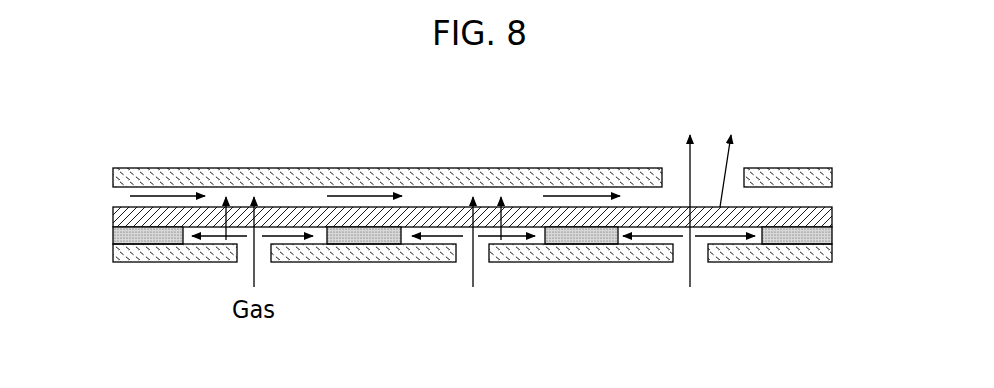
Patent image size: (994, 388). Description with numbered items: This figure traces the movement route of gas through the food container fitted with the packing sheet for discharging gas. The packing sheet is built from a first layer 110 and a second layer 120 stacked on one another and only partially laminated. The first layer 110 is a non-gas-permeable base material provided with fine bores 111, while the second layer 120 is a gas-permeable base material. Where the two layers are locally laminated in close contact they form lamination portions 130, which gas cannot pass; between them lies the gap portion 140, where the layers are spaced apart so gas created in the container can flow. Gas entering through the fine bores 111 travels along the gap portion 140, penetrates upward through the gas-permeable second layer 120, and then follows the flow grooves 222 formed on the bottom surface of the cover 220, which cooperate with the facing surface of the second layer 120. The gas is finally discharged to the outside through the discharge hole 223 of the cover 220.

The first layer 110 is at (832, 258).
The fine bores 111 is at (698, 258).
The second layer 120 is at (832, 217).
The lamination portions 130 is at (112, 236).
The gap portion 140 is at (223, 238).
The cover 220 is at (813, 175).
The flow grooves 222 is at (118, 196).
The discharge hole 223 is at (677, 173).